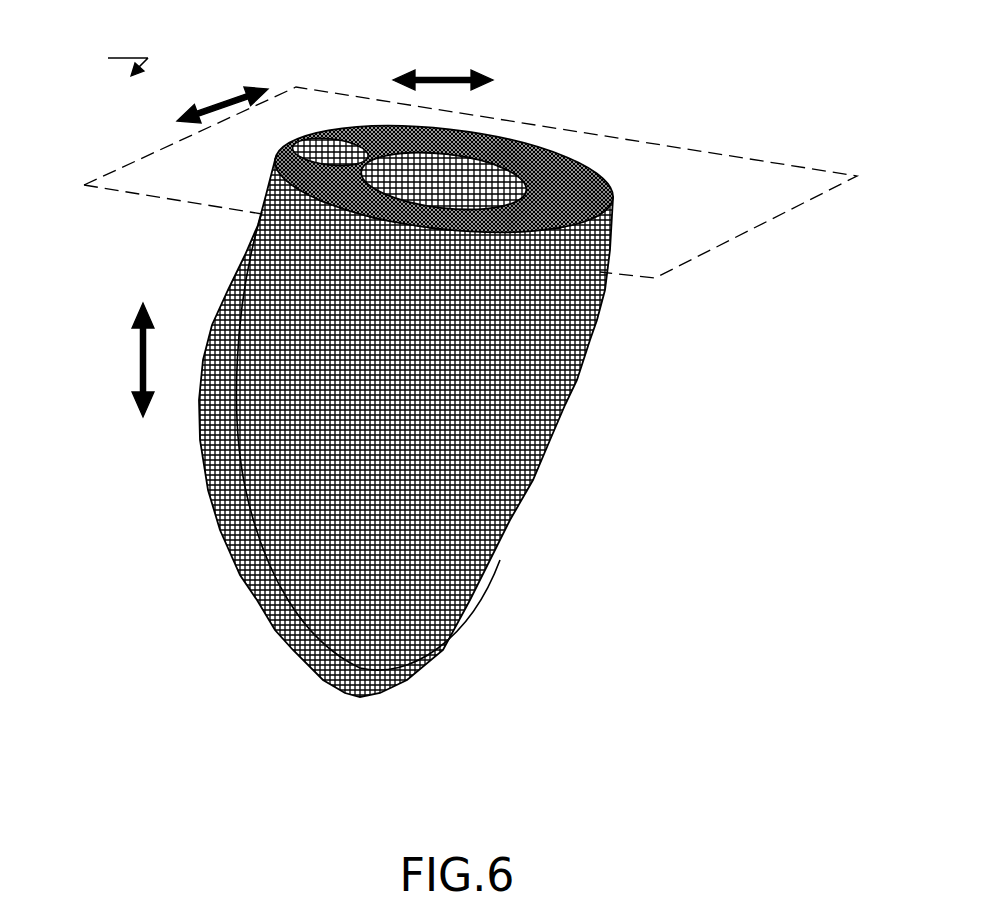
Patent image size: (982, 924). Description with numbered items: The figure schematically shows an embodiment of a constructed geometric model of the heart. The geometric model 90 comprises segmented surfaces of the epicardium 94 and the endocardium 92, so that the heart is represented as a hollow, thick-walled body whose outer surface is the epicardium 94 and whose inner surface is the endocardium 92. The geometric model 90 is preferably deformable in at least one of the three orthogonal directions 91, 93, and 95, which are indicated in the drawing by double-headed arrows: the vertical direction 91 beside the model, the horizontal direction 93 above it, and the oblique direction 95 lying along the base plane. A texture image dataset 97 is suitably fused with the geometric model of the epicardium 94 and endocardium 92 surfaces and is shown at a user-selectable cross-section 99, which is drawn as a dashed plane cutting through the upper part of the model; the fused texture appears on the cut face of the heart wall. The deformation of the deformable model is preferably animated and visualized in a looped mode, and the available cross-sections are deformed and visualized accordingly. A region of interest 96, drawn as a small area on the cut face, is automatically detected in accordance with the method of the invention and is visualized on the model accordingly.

The geometric model 90 is at (128, 53).
The orthogonal direction 91 is at (137, 368).
The endocardium 92 is at (523, 343).
The orthogonal direction 93 is at (441, 73).
The epicardium 94 is at (543, 447).
The orthogonal direction 95 is at (198, 107).
The region of interest 96 is at (335, 150).
The texture image dataset 97 is at (588, 210).
The user-selectable cross-section 99 is at (783, 172).